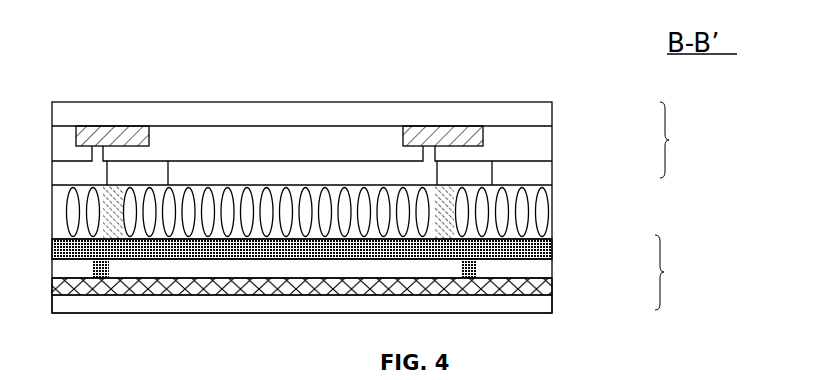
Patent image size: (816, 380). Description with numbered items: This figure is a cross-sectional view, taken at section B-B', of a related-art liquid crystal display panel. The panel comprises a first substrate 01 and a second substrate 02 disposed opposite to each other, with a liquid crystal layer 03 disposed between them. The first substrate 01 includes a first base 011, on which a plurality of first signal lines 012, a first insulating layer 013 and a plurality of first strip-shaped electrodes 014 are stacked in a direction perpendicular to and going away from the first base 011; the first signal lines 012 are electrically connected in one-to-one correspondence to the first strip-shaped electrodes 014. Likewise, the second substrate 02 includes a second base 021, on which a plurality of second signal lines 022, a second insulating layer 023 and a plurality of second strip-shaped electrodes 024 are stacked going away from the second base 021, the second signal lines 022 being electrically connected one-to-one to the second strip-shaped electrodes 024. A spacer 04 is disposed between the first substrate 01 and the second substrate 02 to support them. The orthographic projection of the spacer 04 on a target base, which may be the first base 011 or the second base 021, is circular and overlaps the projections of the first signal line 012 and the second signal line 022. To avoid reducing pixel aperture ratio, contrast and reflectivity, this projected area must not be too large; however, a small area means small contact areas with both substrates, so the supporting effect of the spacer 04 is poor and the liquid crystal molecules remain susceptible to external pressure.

The first substrate 01 is at (378, 141).
The first base 011 is at (531, 113).
The first signal line 012 is at (470, 138).
The first insulating layer 013 is at (531, 151).
The first strip-shaped electrode 014 is at (531, 172).
The second substrate 02 is at (375, 274).
The second base 021 is at (527, 305).
The second signal line 022 is at (524, 285).
The second insulating layer 023 is at (527, 268).
The second strip-shaped electrode 024 is at (528, 248).
The liquid crystal layer 03 is at (542, 196).
The spacer 04 is at (440, 219).